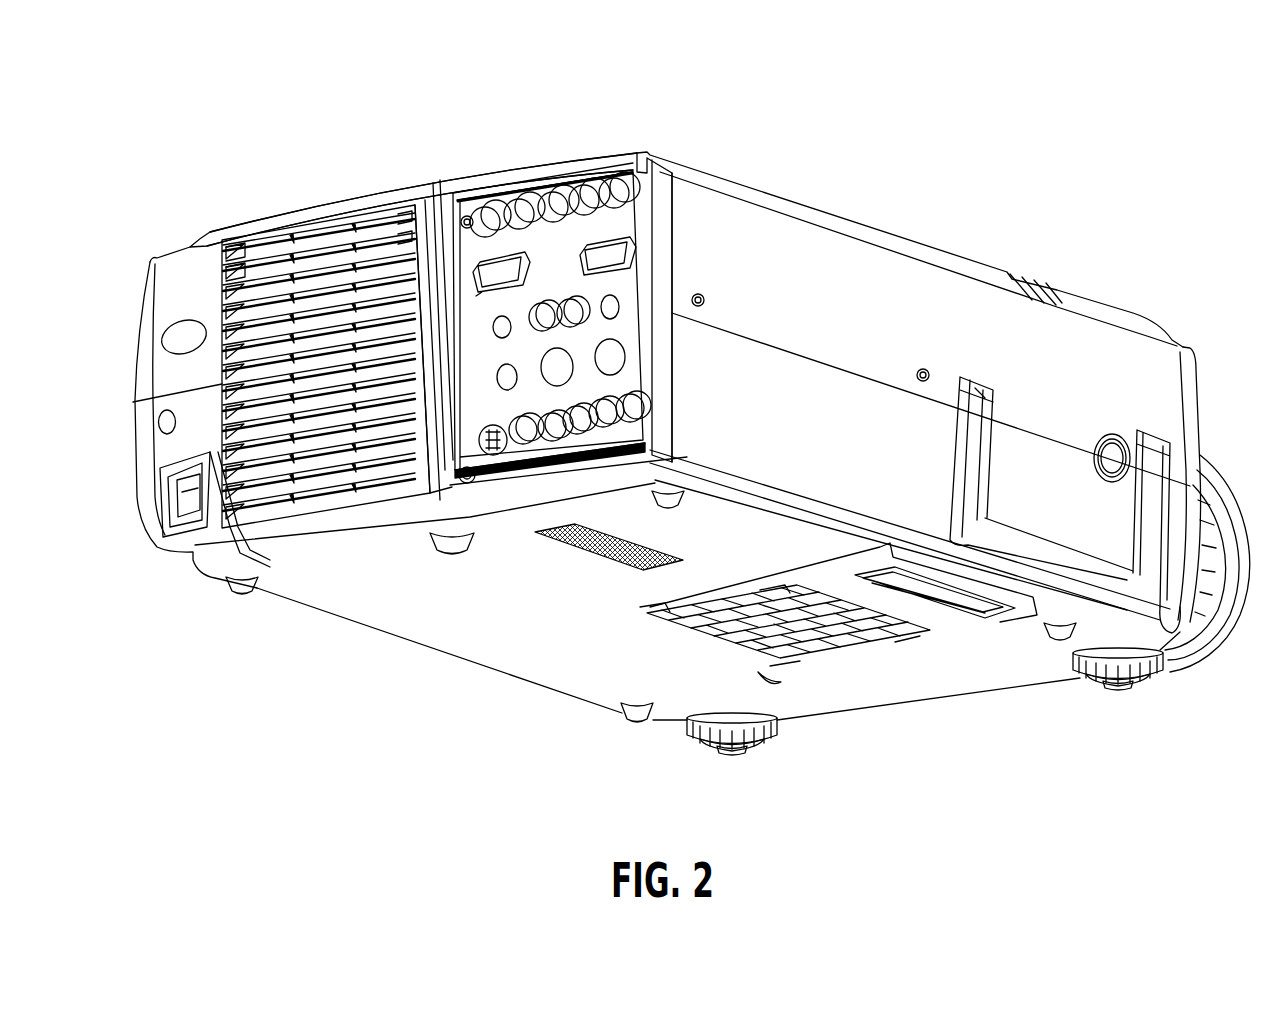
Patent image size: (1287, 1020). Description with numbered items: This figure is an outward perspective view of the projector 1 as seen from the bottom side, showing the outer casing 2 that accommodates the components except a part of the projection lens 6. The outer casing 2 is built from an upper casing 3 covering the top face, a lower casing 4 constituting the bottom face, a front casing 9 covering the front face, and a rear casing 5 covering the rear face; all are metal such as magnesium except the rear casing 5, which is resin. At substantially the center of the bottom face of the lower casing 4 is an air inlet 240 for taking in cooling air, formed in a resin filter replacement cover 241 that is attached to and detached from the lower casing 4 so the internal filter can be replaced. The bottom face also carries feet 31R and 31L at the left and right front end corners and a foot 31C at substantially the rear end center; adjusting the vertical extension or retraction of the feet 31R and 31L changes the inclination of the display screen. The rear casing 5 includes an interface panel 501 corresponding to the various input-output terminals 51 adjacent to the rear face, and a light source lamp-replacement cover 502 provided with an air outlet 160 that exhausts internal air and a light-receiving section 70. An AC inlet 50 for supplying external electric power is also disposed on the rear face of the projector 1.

The projector 1 is at (199, 106).
The outer casing 2 is at (837, 190).
The upper casing 3 is at (763, 222).
The lower casing 4 is at (733, 370).
The rear casing 5 is at (641, 215).
The projection lens 6 is at (1215, 522).
The front casing 9 is at (1197, 410).
The foot 31C is at (452, 556).
The foot 31L is at (708, 748).
The foot 31R is at (1150, 685).
The AC inlet 50 is at (183, 507).
The input-output terminals 51 is at (516, 229).
The light-receiving section 70 is at (172, 342).
The air outlet 160 is at (322, 270).
The air inlet 240 is at (815, 650).
The filter replacement cover 241 is at (957, 620).
The interface panel 501 is at (458, 255).
The light source lamp-replacement cover 502 is at (378, 205).